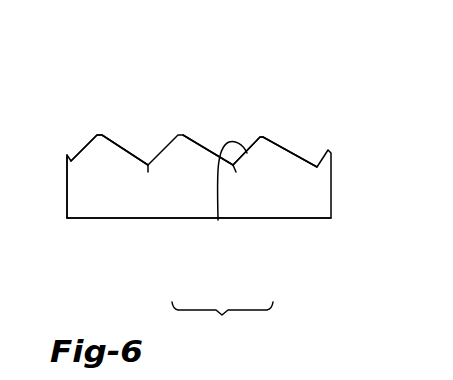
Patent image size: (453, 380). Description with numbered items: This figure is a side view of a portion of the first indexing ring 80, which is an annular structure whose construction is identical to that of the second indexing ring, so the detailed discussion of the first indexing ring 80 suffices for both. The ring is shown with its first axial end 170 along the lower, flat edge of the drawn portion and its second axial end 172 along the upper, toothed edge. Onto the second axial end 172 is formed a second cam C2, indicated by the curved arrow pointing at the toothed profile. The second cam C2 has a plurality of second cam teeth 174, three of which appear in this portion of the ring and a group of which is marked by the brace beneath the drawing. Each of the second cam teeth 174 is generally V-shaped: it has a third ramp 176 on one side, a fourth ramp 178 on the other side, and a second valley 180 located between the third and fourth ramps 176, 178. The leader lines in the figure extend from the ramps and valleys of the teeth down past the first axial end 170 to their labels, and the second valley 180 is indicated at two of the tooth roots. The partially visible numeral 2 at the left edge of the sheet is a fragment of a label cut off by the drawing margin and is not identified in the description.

The first indexing ring 80 is at (80, 200).
The first axial end 170 is at (82, 220).
The second axial end 172 is at (110, 141).
The second cam teeth 174 is at (222, 322).
The third ramp 176 is at (218, 220).
The fourth ramp 178 is at (195, 147).
The second valley 180 is at (148, 172).
The second cam C2 is at (217, 114).
The partial numeral 2 is at (33, 132).